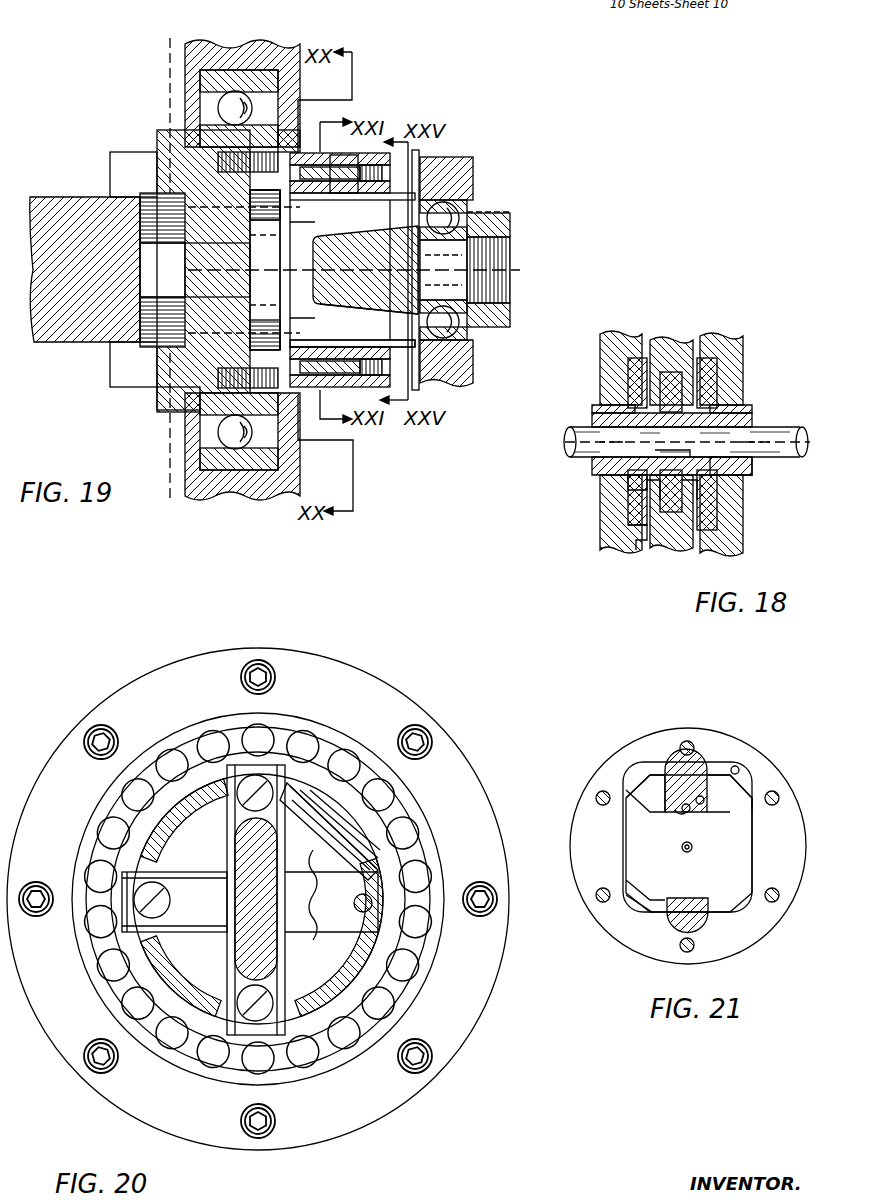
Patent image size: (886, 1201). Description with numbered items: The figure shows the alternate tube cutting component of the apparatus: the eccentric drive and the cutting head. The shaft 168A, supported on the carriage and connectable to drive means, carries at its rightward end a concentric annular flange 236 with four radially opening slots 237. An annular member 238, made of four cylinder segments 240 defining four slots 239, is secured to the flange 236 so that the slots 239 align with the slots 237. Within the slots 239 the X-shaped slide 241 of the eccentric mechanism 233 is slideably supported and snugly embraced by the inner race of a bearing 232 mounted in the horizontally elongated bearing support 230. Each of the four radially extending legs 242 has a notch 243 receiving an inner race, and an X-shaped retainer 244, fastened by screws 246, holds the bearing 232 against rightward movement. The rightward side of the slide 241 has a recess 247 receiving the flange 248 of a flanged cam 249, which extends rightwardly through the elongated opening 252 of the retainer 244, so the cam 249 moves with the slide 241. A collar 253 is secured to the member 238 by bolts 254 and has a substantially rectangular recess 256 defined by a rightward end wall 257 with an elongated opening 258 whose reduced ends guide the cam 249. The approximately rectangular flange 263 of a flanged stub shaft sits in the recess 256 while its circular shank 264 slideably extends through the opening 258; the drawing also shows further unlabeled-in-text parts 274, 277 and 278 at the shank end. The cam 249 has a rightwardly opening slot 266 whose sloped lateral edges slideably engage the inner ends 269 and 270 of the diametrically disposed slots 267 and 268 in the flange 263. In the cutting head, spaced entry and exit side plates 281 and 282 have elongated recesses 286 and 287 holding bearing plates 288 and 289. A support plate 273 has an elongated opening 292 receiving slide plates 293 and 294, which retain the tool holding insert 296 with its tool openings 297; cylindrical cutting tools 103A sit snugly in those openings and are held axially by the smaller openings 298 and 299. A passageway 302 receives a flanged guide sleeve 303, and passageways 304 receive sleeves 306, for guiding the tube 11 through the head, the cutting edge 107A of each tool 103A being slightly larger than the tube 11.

In FIG. 19, the bearing support 230 is at (227, 42).
In FIG. 19, the bearing 232 is at (190, 96).
In FIG. 20, the bearing 232 is at (288, 720).
In FIG. 19, the eccentric mechanism 233 is at (142, 142).
In FIG. 20, the eccentric mechanism 233 is at (340, 656).
In FIG. 19, the annular flange 236 is at (112, 158).
In FIG. 19, the radially opening slots 237 is at (124, 192).
In FIG. 19, the annular member 238 is at (305, 145).
In FIG. 20, the slots 239 is at (326, 766).
In FIG. 20, the segments 240 is at (348, 842).
In FIG. 19, the X-shaped slide 241 is at (150, 410).
In FIG. 20, the X-shaped slide 241 is at (392, 924).
In FIG. 19, the radially extending legs 242 is at (185, 132).
In FIG. 20, the radially extending legs 242 is at (362, 893).
In FIG. 19, the notch 243 is at (205, 400).
In FIG. 19, the X-shaped retainer 244 is at (298, 392).
In FIG. 20, the X-shaped retainer 244 is at (242, 768).
In FIG. 19, the screws 246 is at (200, 212).
In FIG. 20, the screws 246 is at (262, 1012).
In FIG. 19, the recess 247 is at (256, 254).
In FIG. 19, the flange 248 is at (256, 287).
In FIG. 19, the flanged cam 249 is at (244, 330).
In FIG. 20, the flanged cam 249 is at (240, 902).
In FIG. 21, the flanged cam 249 is at (690, 778).
In FIG. 20, the elongated opening 252 is at (236, 855).
In FIG. 19, the collar 253 is at (342, 393).
In FIG. 21, the collar 253 is at (598, 755).
In FIG. 19, the bolts 254 is at (360, 192).
In FIG. 19, the rectangular recess 256 is at (356, 162).
In FIG. 21, the rectangular recess 256 is at (740, 770).
In FIG. 21, the rightward end wall 257 is at (642, 770).
In FIG. 19, the elongated opening 258 is at (394, 200).
In FIG. 21, the rectangular flange 263 is at (742, 846).
In FIG. 19, the circular shank 264 is at (456, 248).
In FIG. 19, the slot 266 is at (350, 240).
In FIG. 21, the slot 266 is at (672, 814).
In FIG. 21, the slot 267 is at (740, 812).
In FIG. 21, the slot 268 is at (694, 898).
In FIG. 19, the inner end 269 is at (256, 230).
In FIG. 21, the inner end 269 is at (684, 815).
In FIG. 19, the inner end 270 is at (370, 314).
In FIG. 21, the inner end 270 is at (668, 898).
In FIG. 19, the support plate 273 is at (470, 366).
In FIG. 18, the support plate 273 is at (663, 335).
In FIG. 19, the outer bearing housing 274 is at (462, 203).
In FIG. 19, the threaded nut 277 is at (506, 279).
In FIG. 19, the nut flange 278 is at (512, 231).
In FIG. 19, the shaft 168A is at (48, 207).
In FIG. 18, the entry side plate 281 is at (606, 340).
In FIG. 18, the exit side plate 282 is at (745, 340).
In FIG. 18, the elongated recess 286 is at (630, 362).
In FIG. 18, the elongated recess 287 is at (716, 368).
In FIG. 18, the bearing plate 288 is at (630, 380).
In FIG. 18, the bearing plate 289 is at (707, 388).
In FIG. 18, the elongated opening 292 is at (650, 490).
In FIG. 18, the slide plate 293 is at (638, 548).
In FIG. 18, the slide plate 294 is at (700, 492).
In FIG. 18, the tool holding insert 296 is at (690, 480).
In FIG. 18, the tool openings 297 is at (692, 410).
In FIG. 18, the opening 298 is at (609, 442).
In FIG. 18, the opening 299 is at (767, 442).
In FIG. 18, the passageway 302 is at (592, 418).
In FIG. 18, the flanged guide sleeve 303 is at (592, 468).
In FIG. 18, the passageways 304 is at (752, 468).
In FIG. 18, the sleeves 306 is at (752, 421).
In FIG. 18, the tube 11 is at (572, 442).
In FIG. 18, the cylindrical cutting tools 103A is at (688, 442).
In FIG. 18, the cutting edge 107A is at (632, 480).